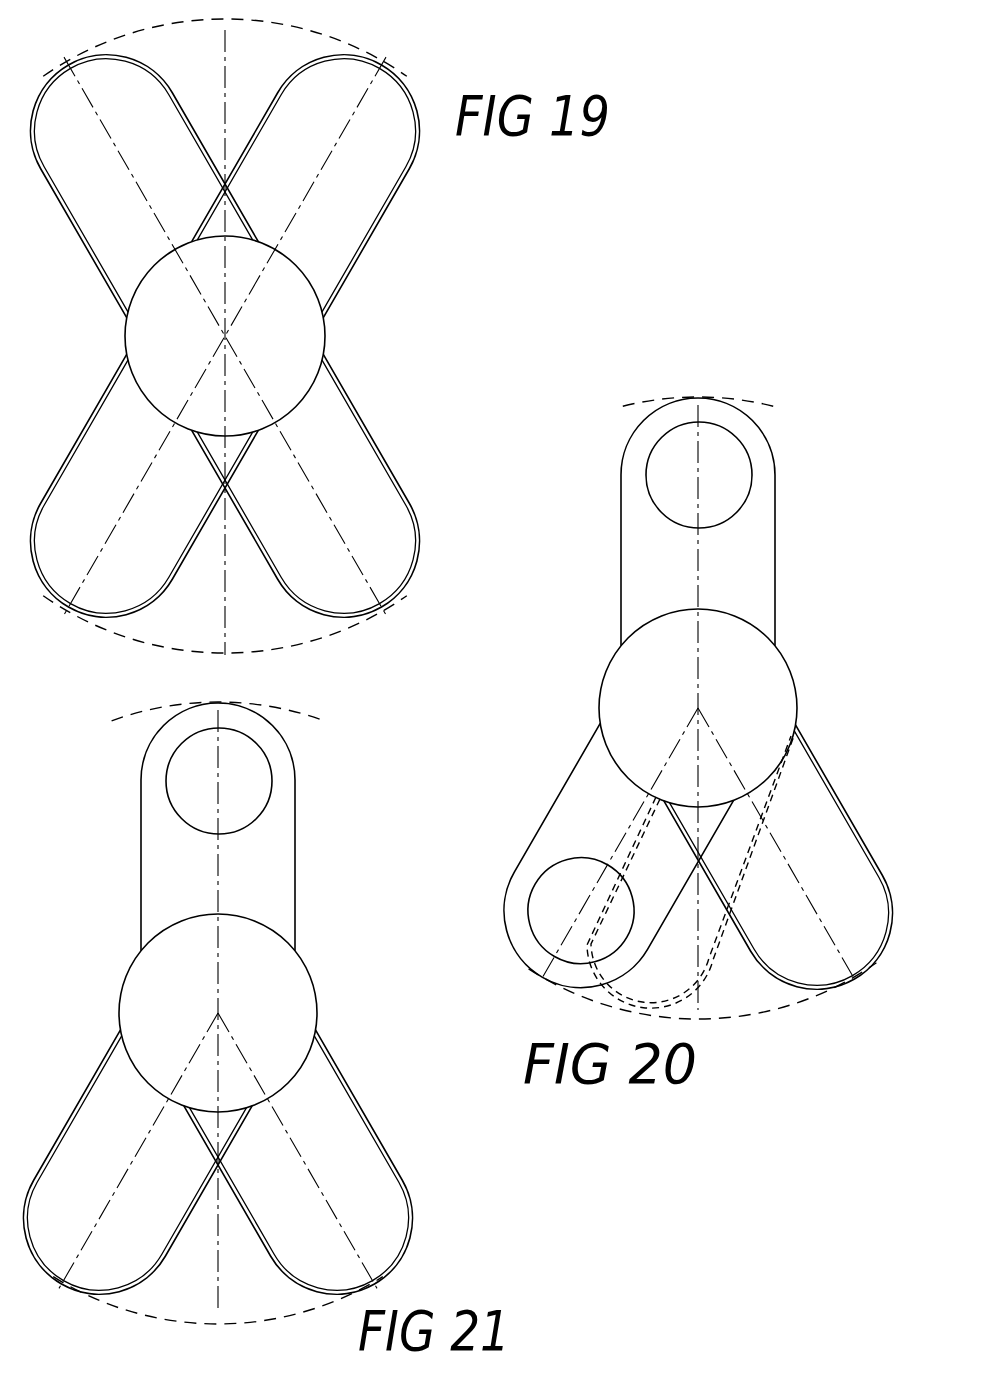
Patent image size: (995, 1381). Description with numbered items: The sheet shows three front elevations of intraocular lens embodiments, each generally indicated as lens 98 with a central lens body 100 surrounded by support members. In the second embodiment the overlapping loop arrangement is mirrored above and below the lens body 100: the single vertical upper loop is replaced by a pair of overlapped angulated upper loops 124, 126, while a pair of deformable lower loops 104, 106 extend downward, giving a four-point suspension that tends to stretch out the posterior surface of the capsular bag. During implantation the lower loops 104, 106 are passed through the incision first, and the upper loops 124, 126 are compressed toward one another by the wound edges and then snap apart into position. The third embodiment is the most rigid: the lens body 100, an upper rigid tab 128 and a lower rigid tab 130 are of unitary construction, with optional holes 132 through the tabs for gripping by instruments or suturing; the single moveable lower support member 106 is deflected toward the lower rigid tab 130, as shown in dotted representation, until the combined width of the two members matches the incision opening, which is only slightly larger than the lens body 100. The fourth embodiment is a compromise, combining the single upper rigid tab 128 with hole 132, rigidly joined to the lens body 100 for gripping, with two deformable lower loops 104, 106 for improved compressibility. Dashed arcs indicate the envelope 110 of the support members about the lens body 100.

In FIG. 19, the lens 98 is at (332, 339).
In FIG. 20, the lens 98 is at (590, 662).
In FIG. 21, the lens 98 is at (318, 951).
In FIG. 19, the lens body 100 is at (306, 365).
In FIG. 20, the lens body 100 is at (773, 678).
In FIG. 21, the lens body 100 is at (305, 1000).
In FIG. 19, the lower loop 104 is at (148, 604).
In FIG. 21, the lower loop 104 is at (155, 1268).
In FIG. 19, the lower loop 106 is at (400, 482).
In FIG. 20, the lower loop 106 is at (817, 760).
In FIG. 21, the lower loop 106 is at (403, 1179).
In FIG. 19, the circular envelope 110 is at (293, 31).
In FIG. 20, the circular envelope 110 is at (723, 400).
In FIG. 21, the circular envelope 110 is at (263, 705).
In FIG. 19, the upper loop 124 is at (48, 171).
In FIG. 19, the upper loop 126 is at (387, 200).
In FIG. 20, the upper rigid tab 128 is at (762, 548).
In FIG. 21, the upper rigid tab 128 is at (287, 840).
In FIG. 20, the lower rigid tab 130 is at (547, 809).
In FIG. 20, the hole 132 is at (740, 464).
In FIG. 21, the hole 132 is at (265, 772).